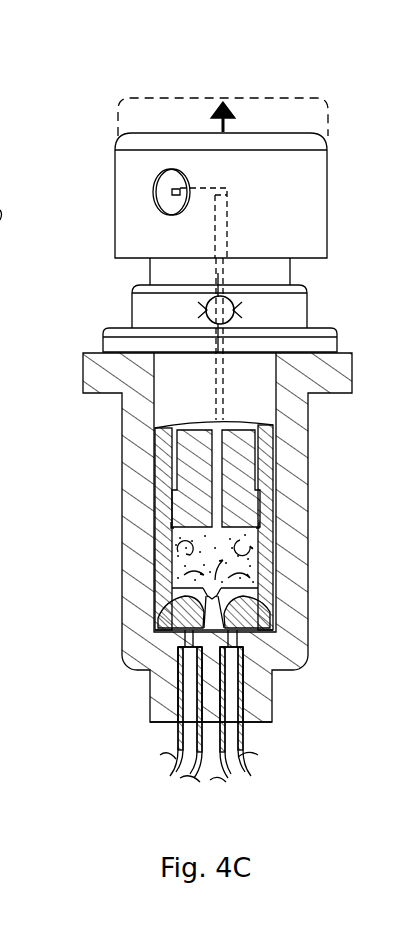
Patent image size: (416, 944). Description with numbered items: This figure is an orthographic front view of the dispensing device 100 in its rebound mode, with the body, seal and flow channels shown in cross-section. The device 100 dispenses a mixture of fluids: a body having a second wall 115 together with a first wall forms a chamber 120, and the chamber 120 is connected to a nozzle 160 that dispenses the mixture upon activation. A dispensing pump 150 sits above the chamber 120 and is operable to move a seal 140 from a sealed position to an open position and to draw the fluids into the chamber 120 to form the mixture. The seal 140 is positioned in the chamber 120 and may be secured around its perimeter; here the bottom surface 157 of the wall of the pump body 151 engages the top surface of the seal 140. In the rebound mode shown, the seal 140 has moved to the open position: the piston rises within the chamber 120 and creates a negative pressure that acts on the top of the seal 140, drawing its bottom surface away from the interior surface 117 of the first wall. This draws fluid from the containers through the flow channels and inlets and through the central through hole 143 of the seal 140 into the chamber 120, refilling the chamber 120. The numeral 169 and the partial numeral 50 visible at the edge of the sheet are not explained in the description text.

The device 100 is at (59, 54).
The nozzle 160 is at (105, 188).
The cap indicator disc 169 is at (308, 192).
The dispensing pump 150 is at (337, 305).
The partial numeral (adjacent figure) 50 is at (12, 256).
The second wall 115 is at (135, 623).
The interior surface 117 is at (377, 633).
The chamber 120 is at (157, 555).
The pump body 151 is at (275, 495).
The central through hole 143 is at (255, 585).
The seal 140 is at (157, 605).
The bottom surface 157 is at (268, 613).